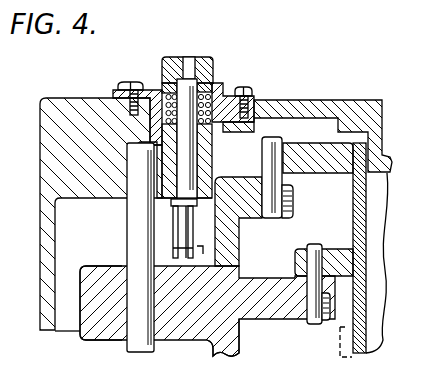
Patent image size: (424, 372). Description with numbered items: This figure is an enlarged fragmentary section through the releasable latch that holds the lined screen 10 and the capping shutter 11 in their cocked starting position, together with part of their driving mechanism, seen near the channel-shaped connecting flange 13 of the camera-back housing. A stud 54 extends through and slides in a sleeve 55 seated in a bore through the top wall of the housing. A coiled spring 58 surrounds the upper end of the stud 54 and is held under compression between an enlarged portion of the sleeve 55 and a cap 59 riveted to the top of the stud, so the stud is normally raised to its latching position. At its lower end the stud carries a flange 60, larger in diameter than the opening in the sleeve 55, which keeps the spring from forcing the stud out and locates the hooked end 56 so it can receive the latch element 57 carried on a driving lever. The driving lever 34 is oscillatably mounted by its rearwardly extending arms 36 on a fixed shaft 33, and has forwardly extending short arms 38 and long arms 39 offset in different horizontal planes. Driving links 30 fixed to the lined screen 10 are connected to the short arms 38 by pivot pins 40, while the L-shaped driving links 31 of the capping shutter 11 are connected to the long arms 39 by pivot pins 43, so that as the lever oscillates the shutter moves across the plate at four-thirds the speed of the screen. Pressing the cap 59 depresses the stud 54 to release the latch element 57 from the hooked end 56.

The lined screen 10 is at (352, 353).
The capping shutter 11 is at (360, 323).
The connecting flange 13 is at (379, 125).
The driving links 30 is at (308, 173).
The driving links 31 is at (335, 251).
The fixed shaft 33 is at (130, 241).
The driving lever 34 is at (232, 349).
The arms 36 is at (108, 338).
The short arms 38 is at (290, 208).
The long arms 39 is at (277, 286).
The pivot pins 40 is at (262, 219).
The pivot pins 43 is at (318, 320).
The stud 54 is at (163, 88).
The sleeve 55 is at (225, 94).
The hooked end 56 is at (185, 253).
The latch element 57 is at (200, 248).
The coiled spring 58 is at (204, 90).
The cap 59 is at (168, 57).
The flange 60 is at (182, 206).